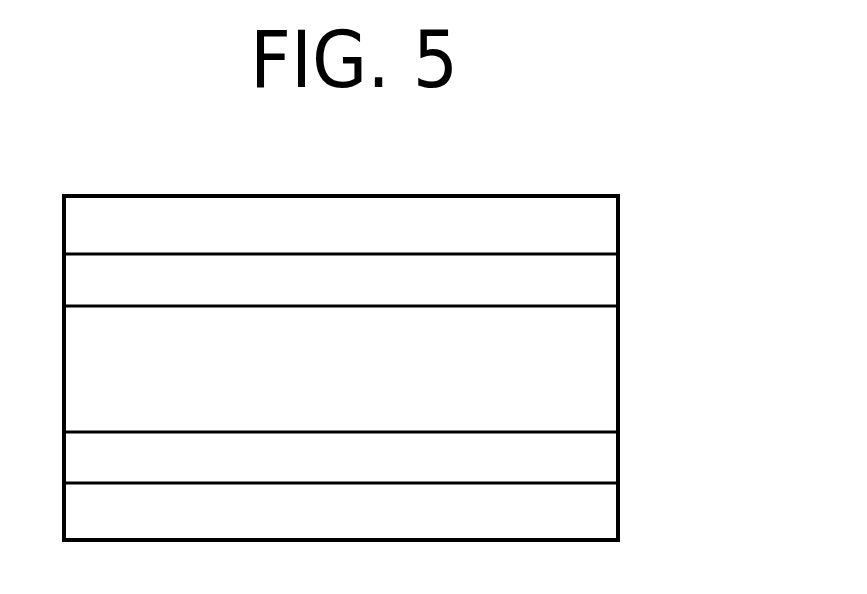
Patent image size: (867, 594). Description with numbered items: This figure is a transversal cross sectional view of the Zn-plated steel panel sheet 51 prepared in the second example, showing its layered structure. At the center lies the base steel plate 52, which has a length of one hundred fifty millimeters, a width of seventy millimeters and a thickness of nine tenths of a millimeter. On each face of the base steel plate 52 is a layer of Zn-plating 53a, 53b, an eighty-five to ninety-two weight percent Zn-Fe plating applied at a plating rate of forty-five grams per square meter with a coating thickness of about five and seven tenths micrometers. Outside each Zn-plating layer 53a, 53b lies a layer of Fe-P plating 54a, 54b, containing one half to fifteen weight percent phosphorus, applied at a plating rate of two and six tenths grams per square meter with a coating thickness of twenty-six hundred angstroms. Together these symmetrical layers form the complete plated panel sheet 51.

The Zn-plated steel panel sheet 51 is at (534, 186).
The base steel plate 52 is at (621, 362).
The Zn-plating 53a is at (621, 279).
The Zn-plating 53b is at (621, 452).
The Fe—P plating 54a is at (621, 226).
The Fe—P plating 54b is at (621, 518).